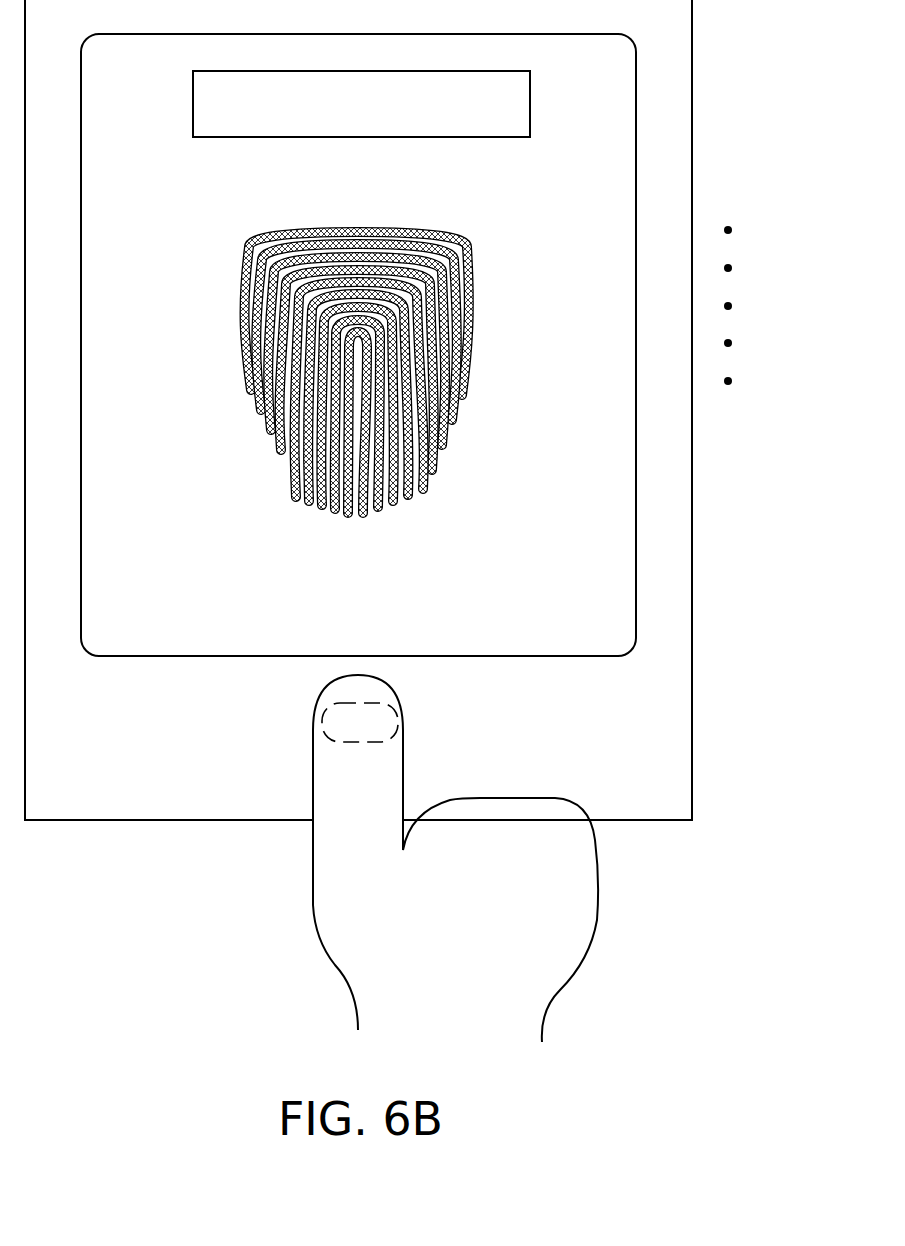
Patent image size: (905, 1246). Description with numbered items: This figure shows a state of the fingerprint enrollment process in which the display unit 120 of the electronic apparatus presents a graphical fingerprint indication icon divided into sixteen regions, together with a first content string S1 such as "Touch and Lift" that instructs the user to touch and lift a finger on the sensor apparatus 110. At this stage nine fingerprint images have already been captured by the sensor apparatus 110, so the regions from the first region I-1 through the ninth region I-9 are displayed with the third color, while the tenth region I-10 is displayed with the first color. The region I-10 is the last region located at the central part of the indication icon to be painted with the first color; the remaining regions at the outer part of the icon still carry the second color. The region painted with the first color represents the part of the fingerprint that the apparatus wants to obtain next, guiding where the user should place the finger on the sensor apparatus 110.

The first content string S1 is at (530, 105).
The region I-1 is at (392, 236).
The region I-9 is at (437, 473).
The region I-10 is at (408, 499).
The display unit 120 is at (636, 616).
The sensor apparatus 110 is at (398, 725).